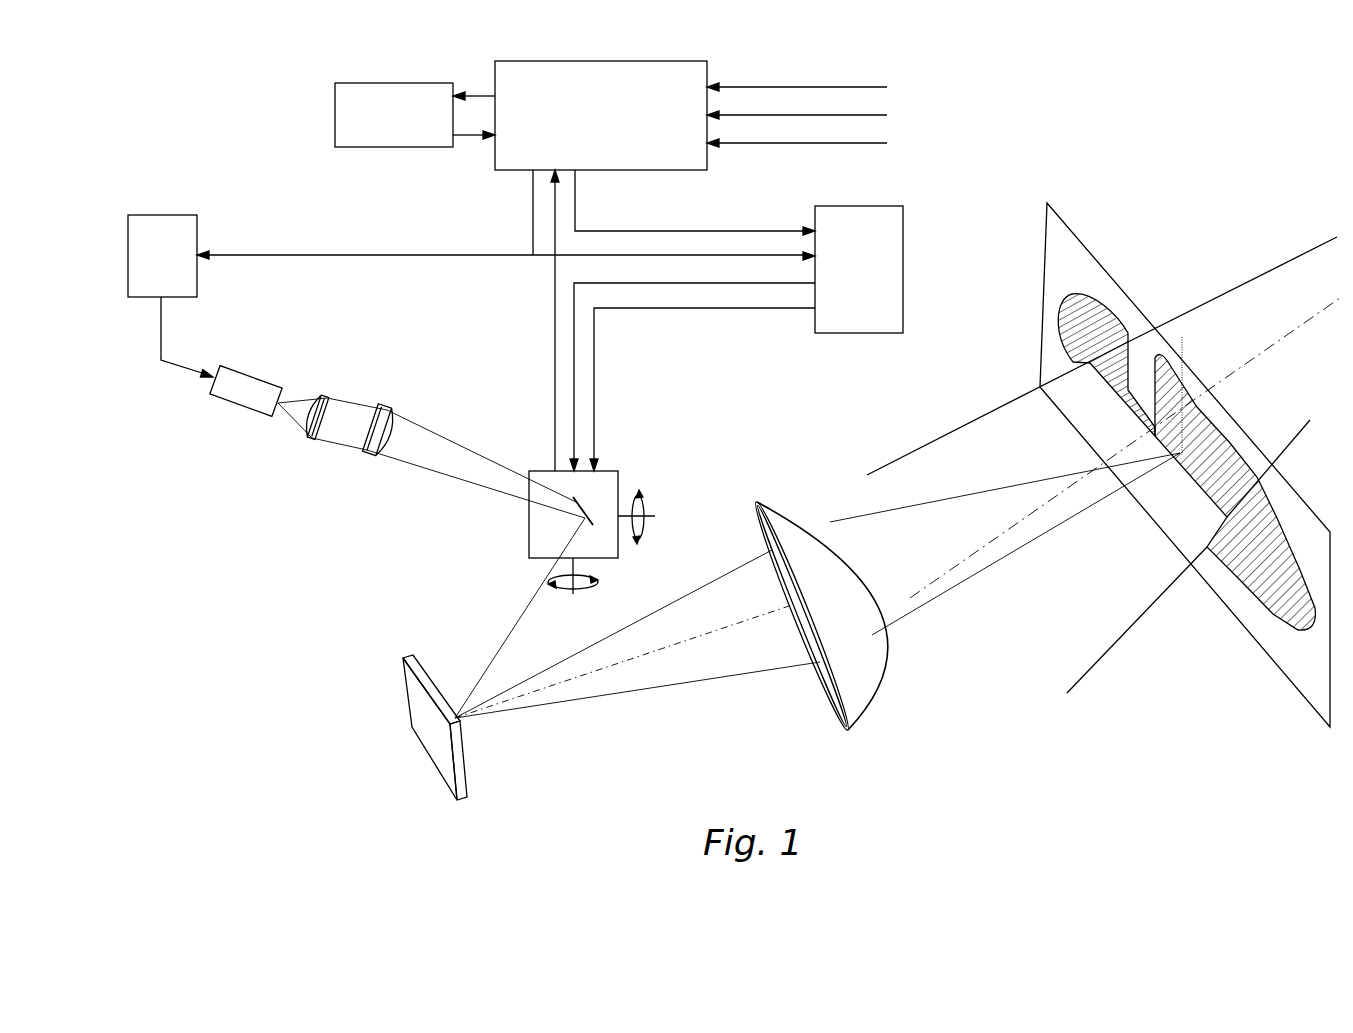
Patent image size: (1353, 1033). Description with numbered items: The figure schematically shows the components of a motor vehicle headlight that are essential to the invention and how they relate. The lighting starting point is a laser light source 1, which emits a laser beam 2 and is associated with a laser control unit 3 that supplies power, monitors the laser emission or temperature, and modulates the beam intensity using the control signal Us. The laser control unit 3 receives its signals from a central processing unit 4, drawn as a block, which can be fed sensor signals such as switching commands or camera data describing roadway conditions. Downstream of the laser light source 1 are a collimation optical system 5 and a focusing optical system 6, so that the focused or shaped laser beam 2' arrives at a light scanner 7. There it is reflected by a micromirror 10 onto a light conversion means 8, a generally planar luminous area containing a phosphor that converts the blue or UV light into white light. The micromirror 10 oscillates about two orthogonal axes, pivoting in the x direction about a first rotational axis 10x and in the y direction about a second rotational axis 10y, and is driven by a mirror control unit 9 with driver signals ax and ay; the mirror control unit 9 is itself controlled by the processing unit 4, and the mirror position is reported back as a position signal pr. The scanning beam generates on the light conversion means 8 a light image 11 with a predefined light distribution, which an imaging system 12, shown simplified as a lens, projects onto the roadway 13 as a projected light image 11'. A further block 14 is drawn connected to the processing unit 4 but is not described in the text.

The laser light source 1 is at (227, 402).
The laser beam 2 is at (308, 478).
The focused or shaped laser beam 2' is at (476, 484).
The laser control unit 3 is at (471, 296).
The central processing unit 4 is at (681, 266).
The collimation optical system 5 is at (313, 442).
The focusing optical system 6 is at (362, 457).
The light scanner 7 is at (542, 528).
The light conversion means 8 is at (457, 765).
The mirror control unit 9 is at (736, 338).
The micromirror 10 is at (455, 718).
The first rotational axis 10x is at (575, 568).
The second rotational axis 10y is at (650, 513).
The light image 11 is at (525, 793).
The projected light image 11' is at (1186, 517).
The imaging system 12 is at (860, 673).
The roadway 13 is at (1070, 643).
The memory 14 is at (394, 115).